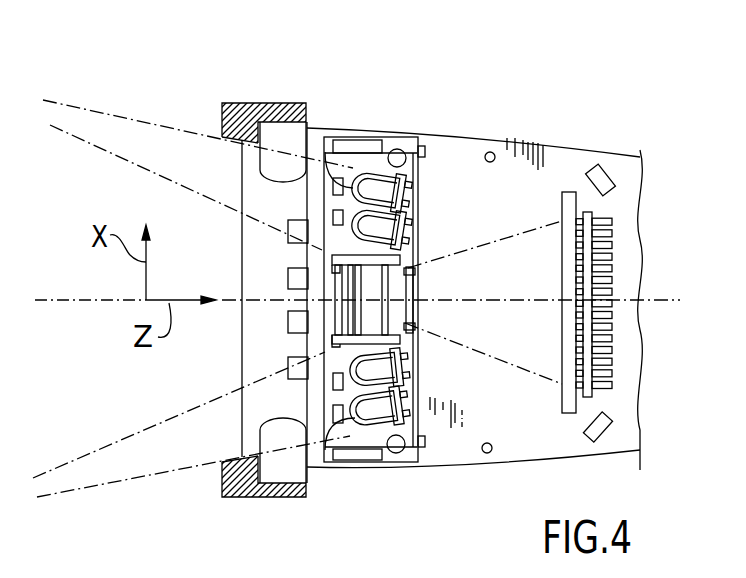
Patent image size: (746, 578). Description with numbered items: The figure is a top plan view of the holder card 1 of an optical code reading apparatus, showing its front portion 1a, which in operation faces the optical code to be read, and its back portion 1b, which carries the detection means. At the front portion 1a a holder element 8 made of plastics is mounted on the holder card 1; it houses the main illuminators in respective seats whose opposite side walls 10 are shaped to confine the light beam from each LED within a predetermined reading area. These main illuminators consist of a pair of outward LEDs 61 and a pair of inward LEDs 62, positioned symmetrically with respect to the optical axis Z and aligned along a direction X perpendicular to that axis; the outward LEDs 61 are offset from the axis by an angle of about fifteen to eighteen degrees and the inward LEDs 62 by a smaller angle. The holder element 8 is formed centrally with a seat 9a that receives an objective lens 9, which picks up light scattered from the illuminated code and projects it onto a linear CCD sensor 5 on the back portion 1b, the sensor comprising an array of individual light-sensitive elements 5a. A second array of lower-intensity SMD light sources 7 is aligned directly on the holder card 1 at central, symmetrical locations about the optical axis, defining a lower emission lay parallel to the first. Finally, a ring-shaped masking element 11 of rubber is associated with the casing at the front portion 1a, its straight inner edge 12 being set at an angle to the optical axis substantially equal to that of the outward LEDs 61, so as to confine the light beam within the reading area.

The holder card 1 is at (528, 141).
The front portion 1a is at (375, 115).
The back portion 1b is at (621, 140).
The CCD sensor 5 is at (565, 203).
The light-sensitive elements 5a is at (568, 337).
The second array of light sources 7 is at (290, 236).
The holder element 8 is at (410, 167).
The objective lens 9 is at (404, 280).
The seat 9a is at (400, 330).
The side walls 10 is at (350, 160).
The ring-shaped masking element 11 is at (250, 104).
The straight inner edge 12 is at (244, 140).
The outward LEDs 61 is at (404, 194).
The inward LEDs 62 is at (404, 236).